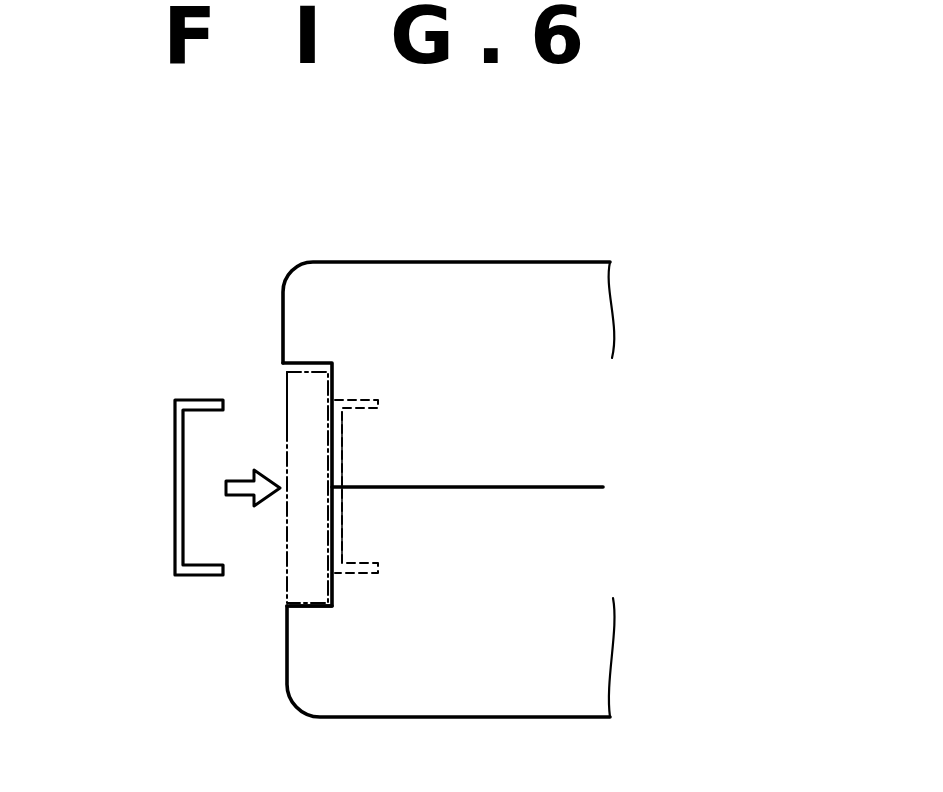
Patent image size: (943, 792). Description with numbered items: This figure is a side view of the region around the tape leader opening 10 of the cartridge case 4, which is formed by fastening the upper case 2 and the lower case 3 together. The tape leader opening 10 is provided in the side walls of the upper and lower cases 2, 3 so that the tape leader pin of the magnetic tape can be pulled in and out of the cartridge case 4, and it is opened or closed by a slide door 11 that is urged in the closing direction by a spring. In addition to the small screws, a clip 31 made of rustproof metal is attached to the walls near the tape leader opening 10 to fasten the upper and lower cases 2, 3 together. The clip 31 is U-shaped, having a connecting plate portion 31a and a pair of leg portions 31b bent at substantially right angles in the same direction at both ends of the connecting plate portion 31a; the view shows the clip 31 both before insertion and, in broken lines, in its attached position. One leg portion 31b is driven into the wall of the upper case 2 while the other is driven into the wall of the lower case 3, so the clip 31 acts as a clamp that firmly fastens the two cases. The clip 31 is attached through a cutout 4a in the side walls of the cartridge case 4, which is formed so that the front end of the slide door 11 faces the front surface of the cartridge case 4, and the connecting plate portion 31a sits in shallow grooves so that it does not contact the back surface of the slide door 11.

The upper case 2 is at (412, 277).
The lower case 3 is at (403, 703).
The cartridge case 4 is at (285, 256).
The cutout 4a is at (312, 610).
The tape leader opening 10 is at (275, 575).
The slide door 11 is at (284, 401).
The clip 31 is at (165, 543).
The connecting plate portion 31a is at (175, 452).
The leg portions 31b is at (200, 398).